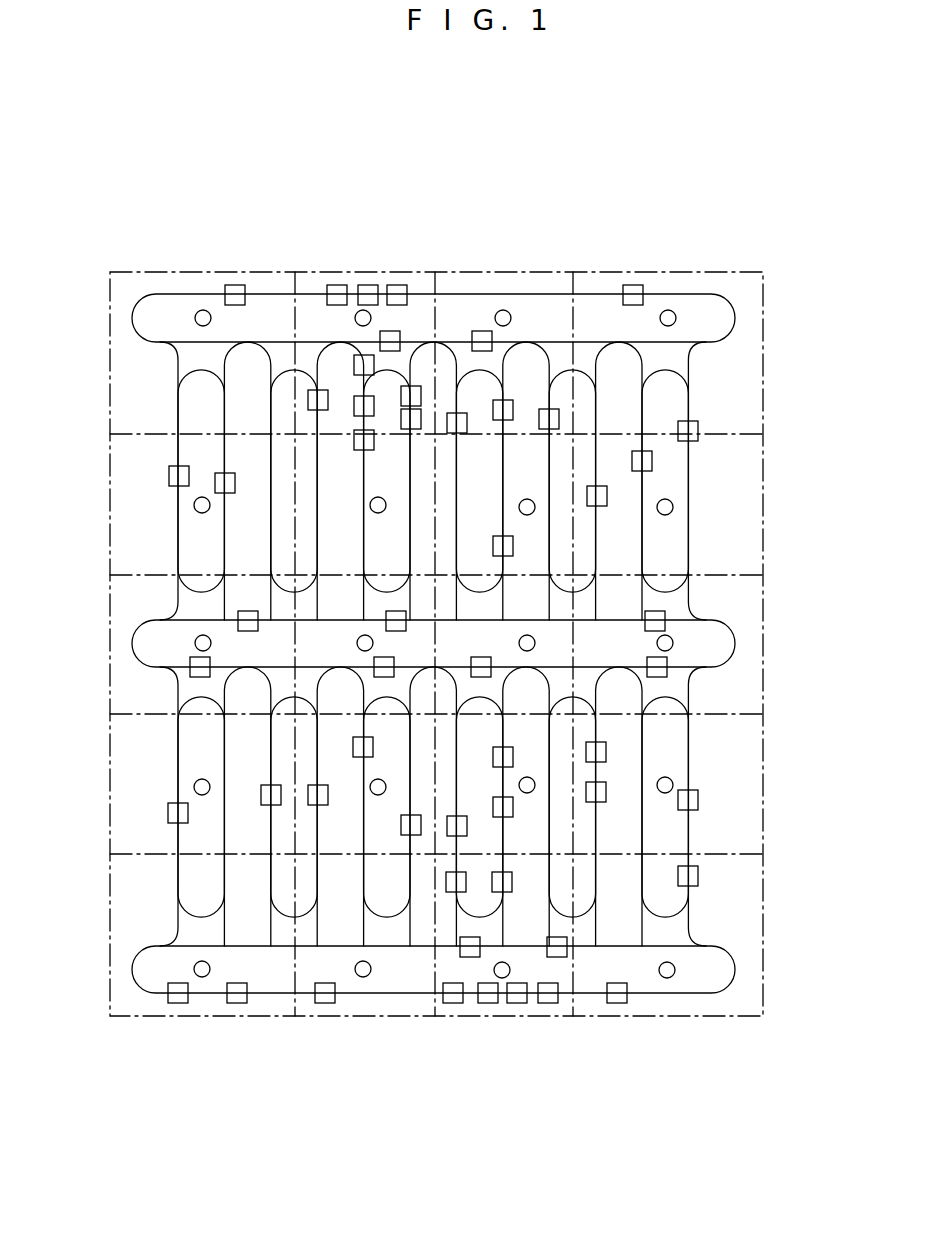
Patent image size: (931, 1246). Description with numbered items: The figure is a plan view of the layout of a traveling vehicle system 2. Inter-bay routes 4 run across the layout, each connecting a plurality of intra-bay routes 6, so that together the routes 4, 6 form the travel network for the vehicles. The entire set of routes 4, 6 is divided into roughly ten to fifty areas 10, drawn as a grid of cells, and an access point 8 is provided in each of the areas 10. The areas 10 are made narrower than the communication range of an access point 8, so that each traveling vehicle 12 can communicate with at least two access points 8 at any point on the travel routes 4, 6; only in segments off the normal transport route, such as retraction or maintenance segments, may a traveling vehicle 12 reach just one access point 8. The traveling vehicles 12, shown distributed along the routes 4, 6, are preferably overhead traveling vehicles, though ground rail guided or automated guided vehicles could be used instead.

The traveling vehicle system 2 is at (440, 1118).
The inter-bay route 4 is at (738, 316).
The intra-bay route 6 is at (178, 520).
The access point 8 is at (211, 318).
The area 10 is at (195, 272).
The traveling vehicle 12 is at (240, 285).